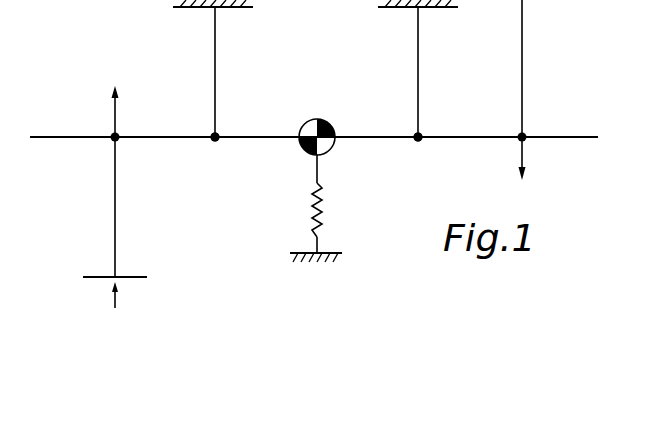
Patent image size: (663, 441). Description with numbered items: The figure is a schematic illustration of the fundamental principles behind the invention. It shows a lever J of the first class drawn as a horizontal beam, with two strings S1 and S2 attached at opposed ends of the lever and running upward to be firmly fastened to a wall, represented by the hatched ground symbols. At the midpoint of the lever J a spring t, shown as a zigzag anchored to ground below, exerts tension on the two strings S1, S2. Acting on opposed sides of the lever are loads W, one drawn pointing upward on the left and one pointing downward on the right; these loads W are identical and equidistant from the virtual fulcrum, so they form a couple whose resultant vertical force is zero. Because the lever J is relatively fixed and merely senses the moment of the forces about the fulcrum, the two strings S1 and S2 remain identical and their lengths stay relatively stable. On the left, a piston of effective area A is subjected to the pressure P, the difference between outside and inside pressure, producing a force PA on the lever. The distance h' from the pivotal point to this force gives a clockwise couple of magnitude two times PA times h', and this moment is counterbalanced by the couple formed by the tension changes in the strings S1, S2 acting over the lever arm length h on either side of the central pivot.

The loads W is at (113, 116).
The string S1 is at (421, 88).
The string S2 is at (217, 84).
The lever arm length h is at (316, 127).
The piston force moment arm h' is at (315, 151).
The spring t is at (323, 213).
The lever J is at (586, 139).
The effective area A is at (122, 214).
The pressure P is at (112, 309).